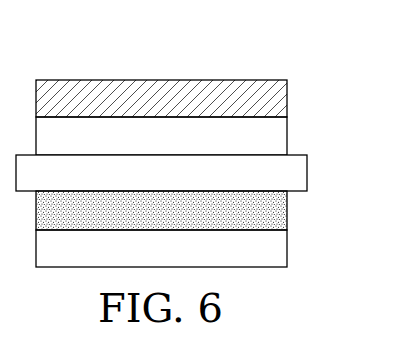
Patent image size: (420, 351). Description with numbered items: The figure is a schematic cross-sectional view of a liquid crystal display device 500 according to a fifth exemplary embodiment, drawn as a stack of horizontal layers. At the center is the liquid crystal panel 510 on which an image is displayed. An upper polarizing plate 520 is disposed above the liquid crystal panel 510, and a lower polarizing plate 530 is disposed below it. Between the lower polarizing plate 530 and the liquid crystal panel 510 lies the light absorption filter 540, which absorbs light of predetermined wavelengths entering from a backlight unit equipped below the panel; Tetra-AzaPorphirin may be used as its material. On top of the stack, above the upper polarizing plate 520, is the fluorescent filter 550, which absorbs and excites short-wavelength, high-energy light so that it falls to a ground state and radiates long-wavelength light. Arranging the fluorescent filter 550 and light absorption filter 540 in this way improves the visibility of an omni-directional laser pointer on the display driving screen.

The liquid crystal display device 500 is at (300, 67).
The liquid crystal panel 510 is at (300, 172).
The upper polarizing plate 520 is at (280, 135).
The lower polarizing plate 530 is at (280, 244).
The light absorption filter 540 is at (280, 210).
The fluorescent filter 550 is at (280, 98).